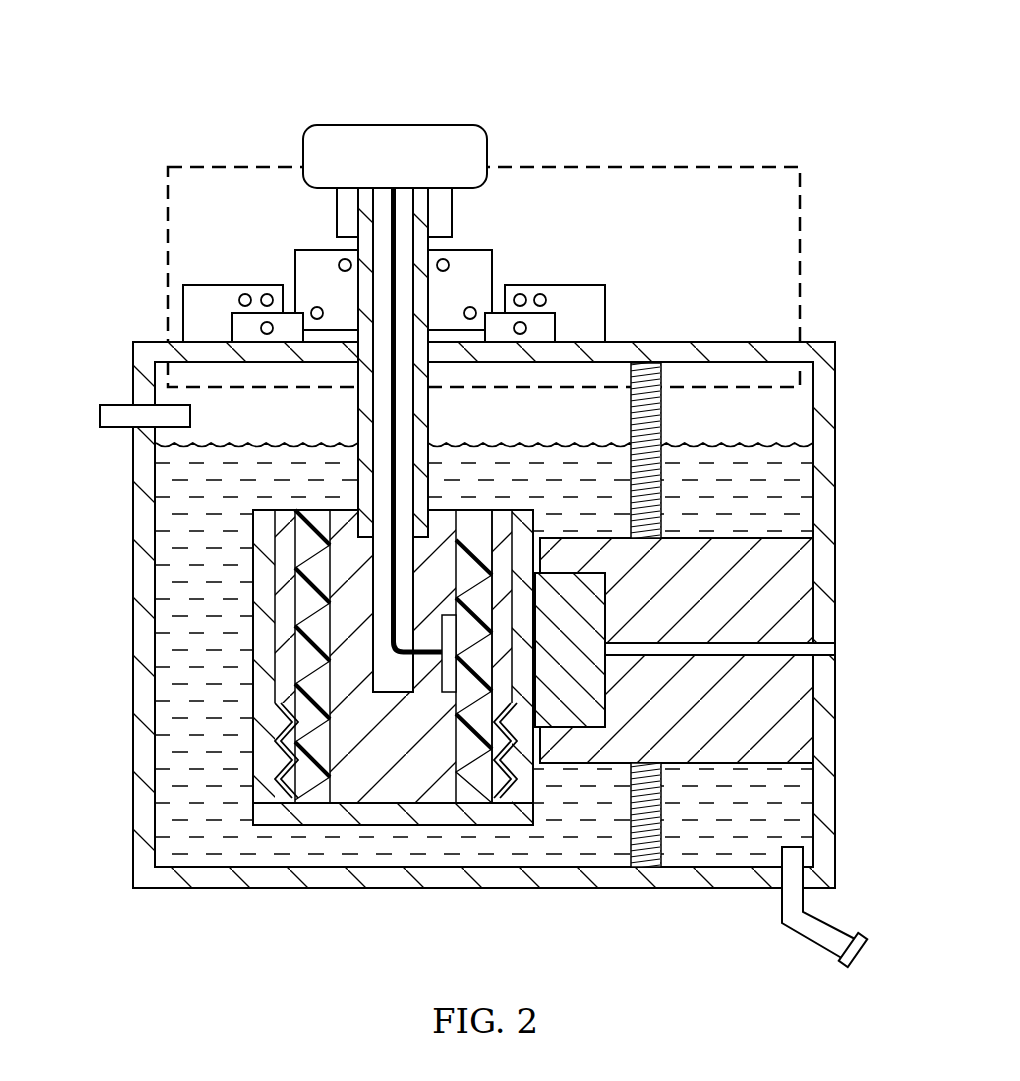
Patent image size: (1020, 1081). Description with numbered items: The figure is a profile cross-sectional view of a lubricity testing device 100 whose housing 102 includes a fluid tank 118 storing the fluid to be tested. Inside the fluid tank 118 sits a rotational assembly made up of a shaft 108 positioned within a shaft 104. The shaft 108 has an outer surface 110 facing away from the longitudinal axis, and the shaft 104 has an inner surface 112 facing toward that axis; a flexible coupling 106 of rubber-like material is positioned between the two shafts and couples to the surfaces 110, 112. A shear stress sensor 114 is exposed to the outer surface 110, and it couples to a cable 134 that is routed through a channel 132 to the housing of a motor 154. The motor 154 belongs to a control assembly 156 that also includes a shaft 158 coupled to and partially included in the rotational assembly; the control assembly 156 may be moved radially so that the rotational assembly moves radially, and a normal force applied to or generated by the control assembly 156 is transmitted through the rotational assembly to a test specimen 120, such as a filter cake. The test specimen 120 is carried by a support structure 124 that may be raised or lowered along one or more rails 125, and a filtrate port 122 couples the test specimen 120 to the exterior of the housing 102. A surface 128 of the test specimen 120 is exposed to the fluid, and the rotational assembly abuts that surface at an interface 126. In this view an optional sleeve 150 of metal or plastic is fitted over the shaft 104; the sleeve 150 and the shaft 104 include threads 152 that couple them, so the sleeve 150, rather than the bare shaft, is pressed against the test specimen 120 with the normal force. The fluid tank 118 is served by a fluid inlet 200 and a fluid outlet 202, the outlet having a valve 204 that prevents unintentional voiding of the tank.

The lubricity testing device 100 is at (330, 72).
The housing 102 is at (628, 877).
The shaft 104 is at (282, 562).
The flexible coupling 106 is at (300, 625).
The shaft 108 is at (390, 793).
The outer surface 110 is at (460, 782).
The inner surface 112 is at (297, 782).
The shear stress sensor 114 is at (453, 590).
The fluid tank 118 is at (565, 857).
The test specimen 120 is at (596, 686).
The filtrate port 122 is at (825, 650).
The support structure 124 is at (697, 545).
The rails 125 is at (662, 412).
The interface 126 is at (528, 586).
The surface 128 is at (536, 655).
The channel 132 is at (372, 432).
The cable 134 is at (390, 480).
The sleeve 150 is at (270, 708).
The threads 152 is at (515, 775).
The motor 154 is at (392, 135).
The control assembly 156 is at (548, 163).
The shaft 158 is at (424, 438).
The fluid inlet 200 is at (108, 415).
The fluid outlet 202 is at (812, 945).
The valve 204 is at (862, 957).